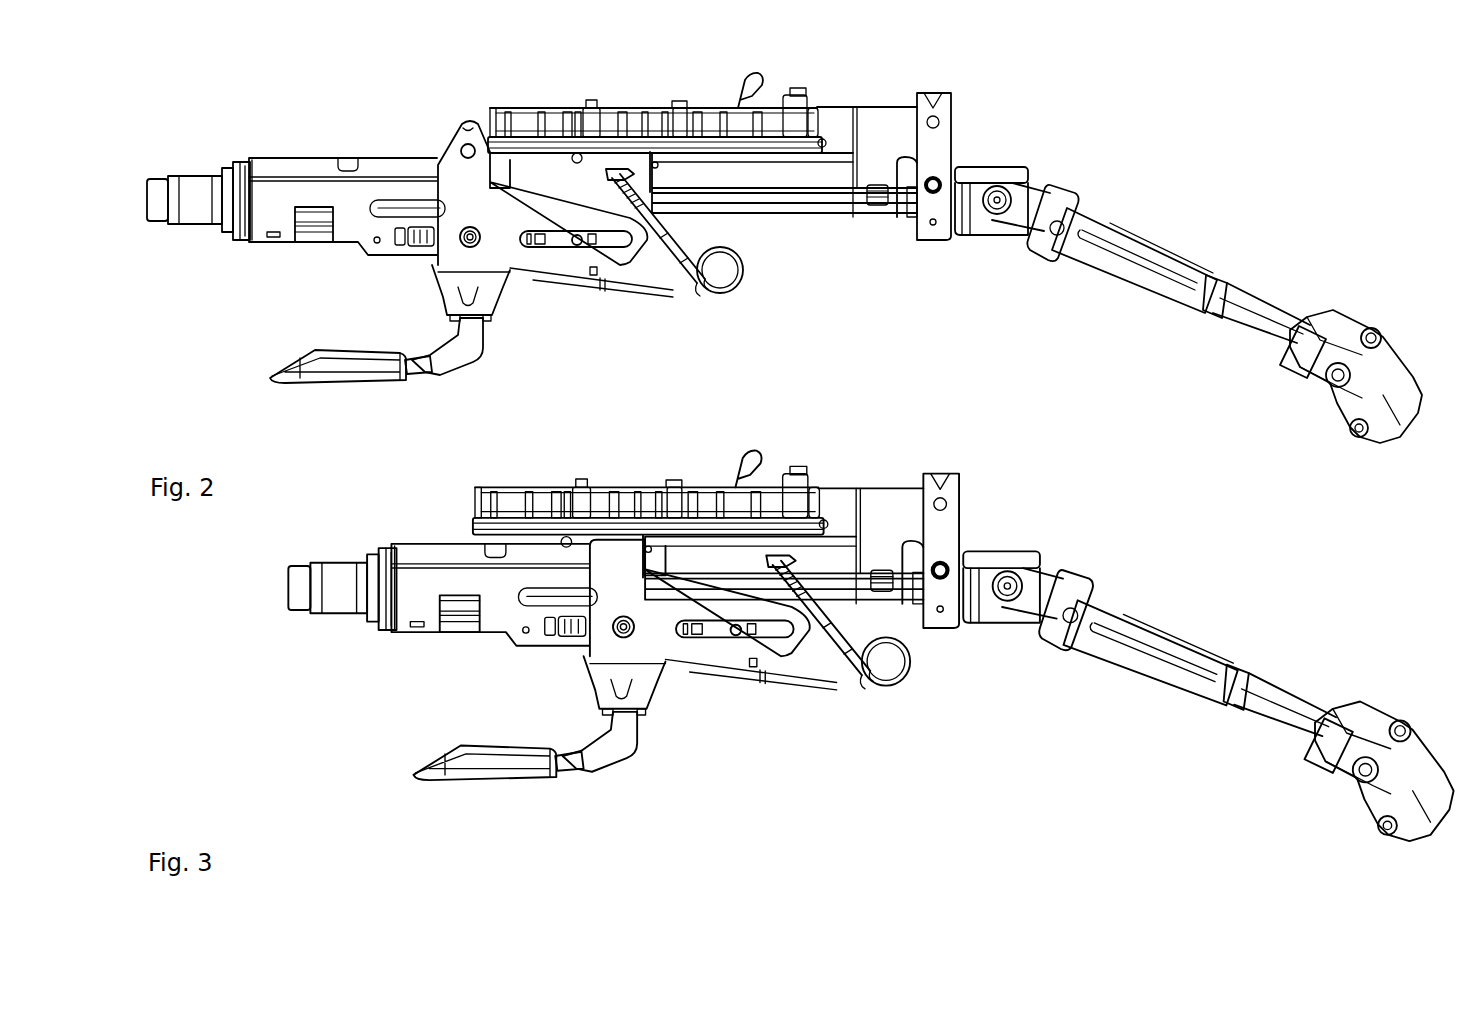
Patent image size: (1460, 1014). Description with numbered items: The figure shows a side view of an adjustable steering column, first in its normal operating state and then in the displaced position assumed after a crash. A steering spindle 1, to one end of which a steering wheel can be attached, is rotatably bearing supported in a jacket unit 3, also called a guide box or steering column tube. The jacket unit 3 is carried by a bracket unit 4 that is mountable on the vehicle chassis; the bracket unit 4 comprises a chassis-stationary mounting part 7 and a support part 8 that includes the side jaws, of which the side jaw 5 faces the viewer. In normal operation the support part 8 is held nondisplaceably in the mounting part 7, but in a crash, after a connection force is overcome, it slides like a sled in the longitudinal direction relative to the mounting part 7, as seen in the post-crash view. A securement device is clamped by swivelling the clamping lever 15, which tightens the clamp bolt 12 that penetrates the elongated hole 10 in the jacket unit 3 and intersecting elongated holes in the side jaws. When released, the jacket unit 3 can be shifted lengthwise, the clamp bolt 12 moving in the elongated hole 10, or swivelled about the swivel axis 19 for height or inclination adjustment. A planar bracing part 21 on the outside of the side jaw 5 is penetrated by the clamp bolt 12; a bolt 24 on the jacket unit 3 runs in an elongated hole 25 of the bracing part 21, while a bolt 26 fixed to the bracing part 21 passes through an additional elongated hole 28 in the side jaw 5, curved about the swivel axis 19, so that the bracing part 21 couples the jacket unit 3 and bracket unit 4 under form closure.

In FIG. 2, the steering spindle 1 is at (197, 212).
In FIG. 3, the steering spindle 1 is at (342, 580).
In FIG. 2, the jacket unit 3 is at (261, 126).
In FIG. 3, the jacket unit 3 is at (434, 658).
In FIG. 2, the bracket unit 4 is at (432, 120).
In FIG. 3, the bracket unit 4 is at (452, 506).
In FIG. 2, the side jaw 5 is at (470, 275).
In FIG. 2, the mounting part 7 is at (708, 120).
In FIG. 3, the mounting part 7 is at (603, 507).
In FIG. 2, the support part 8 is at (582, 181).
In FIG. 3, the support part 8 is at (723, 570).
In FIG. 2, the elongated hole 10 is at (420, 230).
In FIG. 2, the clamp bolt 12 is at (458, 240).
In FIG. 2, the clamping lever 15 is at (450, 350).
In FIG. 3, the clamping lever 15 is at (600, 740).
In FIG. 2, the swivel axis 19 is at (1022, 167).
In FIG. 3, the swivel axis 19 is at (1022, 558).
In FIG. 2, the bracing part 21 is at (557, 258).
In FIG. 3, the bracing part 21 is at (730, 648).
In FIG. 2, the bolt 24 is at (580, 248).
In FIG. 2, the elongated hole 25 is at (672, 290).
In FIG. 2, the bolt 26 is at (523, 140).
In FIG. 2, the elongated hole 28 is at (472, 143).